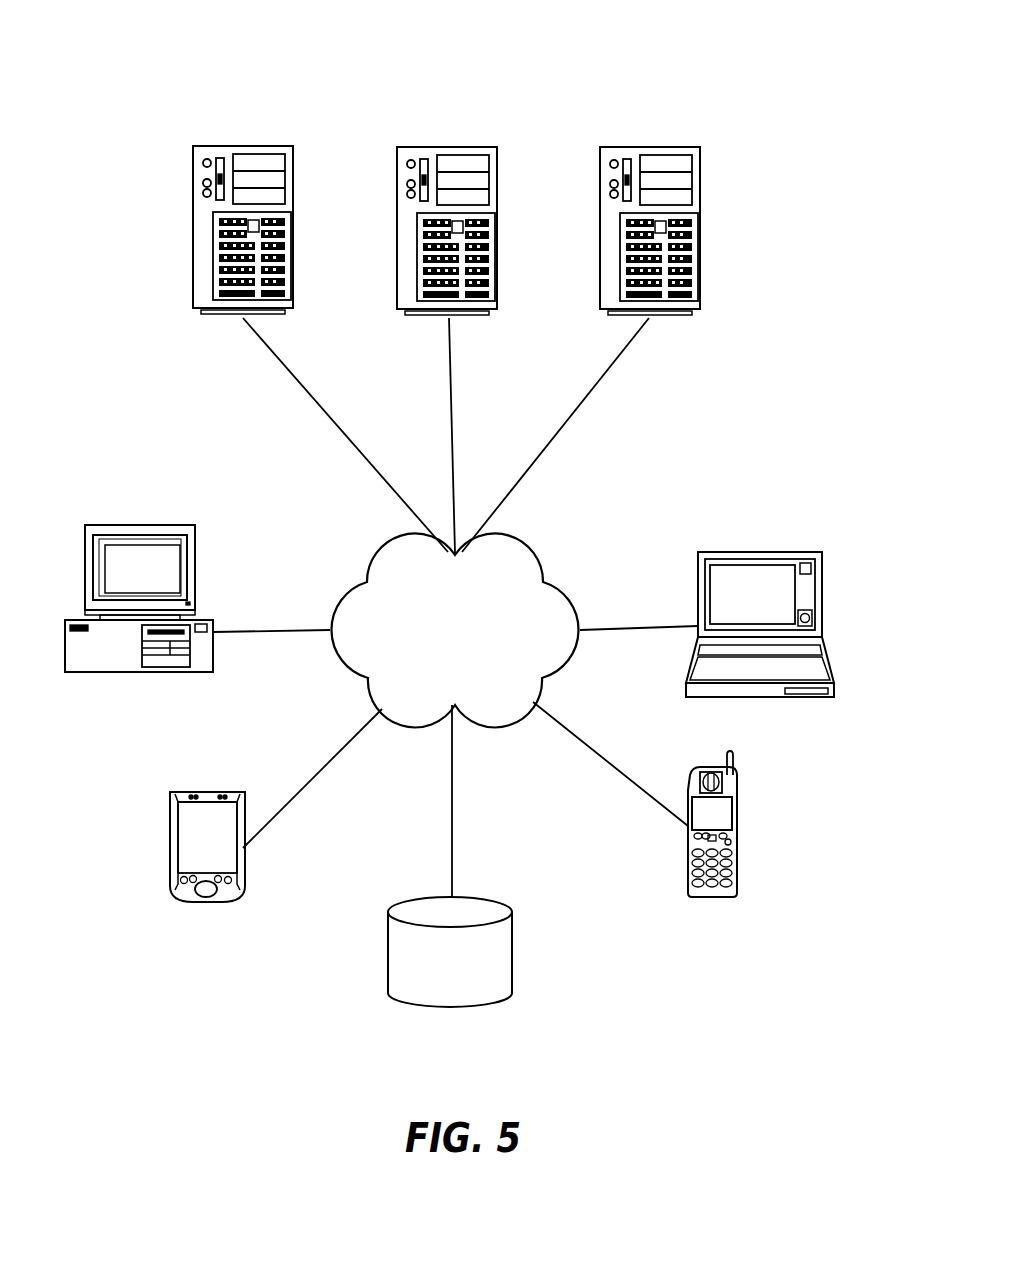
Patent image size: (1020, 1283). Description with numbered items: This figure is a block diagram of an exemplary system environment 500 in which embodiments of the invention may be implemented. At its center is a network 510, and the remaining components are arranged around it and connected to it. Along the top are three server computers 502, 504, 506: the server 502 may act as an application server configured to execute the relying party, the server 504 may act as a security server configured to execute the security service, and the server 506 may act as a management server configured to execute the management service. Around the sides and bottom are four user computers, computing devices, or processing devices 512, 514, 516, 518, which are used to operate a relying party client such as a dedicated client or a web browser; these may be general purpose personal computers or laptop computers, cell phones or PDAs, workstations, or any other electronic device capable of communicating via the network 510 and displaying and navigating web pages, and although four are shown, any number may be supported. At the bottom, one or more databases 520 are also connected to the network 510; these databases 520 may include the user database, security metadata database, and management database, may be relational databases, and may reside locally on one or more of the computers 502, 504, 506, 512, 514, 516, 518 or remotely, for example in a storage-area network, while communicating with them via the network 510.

The system environment 500 is at (765, 92).
The server 502 is at (225, 146).
The server 504 is at (445, 147).
The server 506 is at (702, 228).
The network 510 is at (470, 673).
The user computer 512 is at (137, 525).
The user computer 514 is at (757, 552).
The user computer 516 is at (709, 897).
The user computer 518 is at (205, 902).
The databases 520 is at (468, 998).